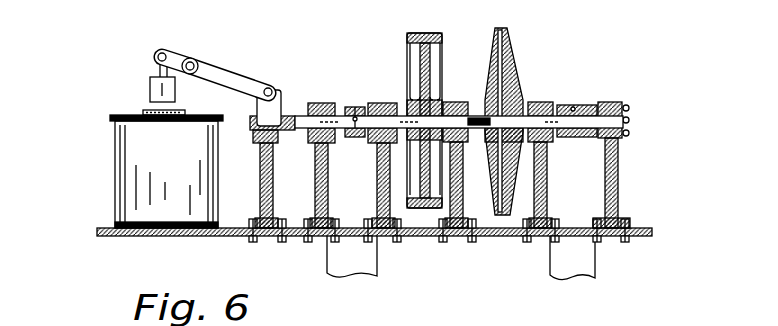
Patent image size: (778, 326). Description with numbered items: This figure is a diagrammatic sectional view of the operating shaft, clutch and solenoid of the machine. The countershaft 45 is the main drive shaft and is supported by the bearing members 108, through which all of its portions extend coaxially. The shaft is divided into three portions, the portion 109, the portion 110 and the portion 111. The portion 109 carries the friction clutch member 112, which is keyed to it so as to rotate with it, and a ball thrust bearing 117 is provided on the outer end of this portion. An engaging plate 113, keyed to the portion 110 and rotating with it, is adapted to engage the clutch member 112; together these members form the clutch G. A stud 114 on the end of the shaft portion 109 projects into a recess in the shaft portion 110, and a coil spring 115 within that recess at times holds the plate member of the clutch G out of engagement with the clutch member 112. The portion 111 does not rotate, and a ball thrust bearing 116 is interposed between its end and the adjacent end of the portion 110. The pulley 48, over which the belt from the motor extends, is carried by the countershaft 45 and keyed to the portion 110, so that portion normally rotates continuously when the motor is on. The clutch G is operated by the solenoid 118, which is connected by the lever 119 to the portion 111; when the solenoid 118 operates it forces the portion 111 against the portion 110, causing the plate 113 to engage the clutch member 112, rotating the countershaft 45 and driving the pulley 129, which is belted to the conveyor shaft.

The solenoid 118 is at (124, 187).
The lever 119 is at (218, 74).
The bearing members 108 is at (377, 187).
The shaft portion 111 is at (315, 120).
The ball thrust bearing 116 is at (355, 116).
The pulley 48 is at (427, 210).
The shaft portion 110 is at (450, 120).
The coil spring 115 is at (488, 118).
The friction clutch member 112 is at (512, 52).
The engaging plate 113 is at (492, 54).
The stud 114 is at (490, 140).
The shaft portion 109 is at (538, 118).
The pulley 129 is at (585, 106).
The countershaft 45 is at (585, 131).
The ball thrust bearing 117 is at (630, 120).
The clutch G is at (507, 217).